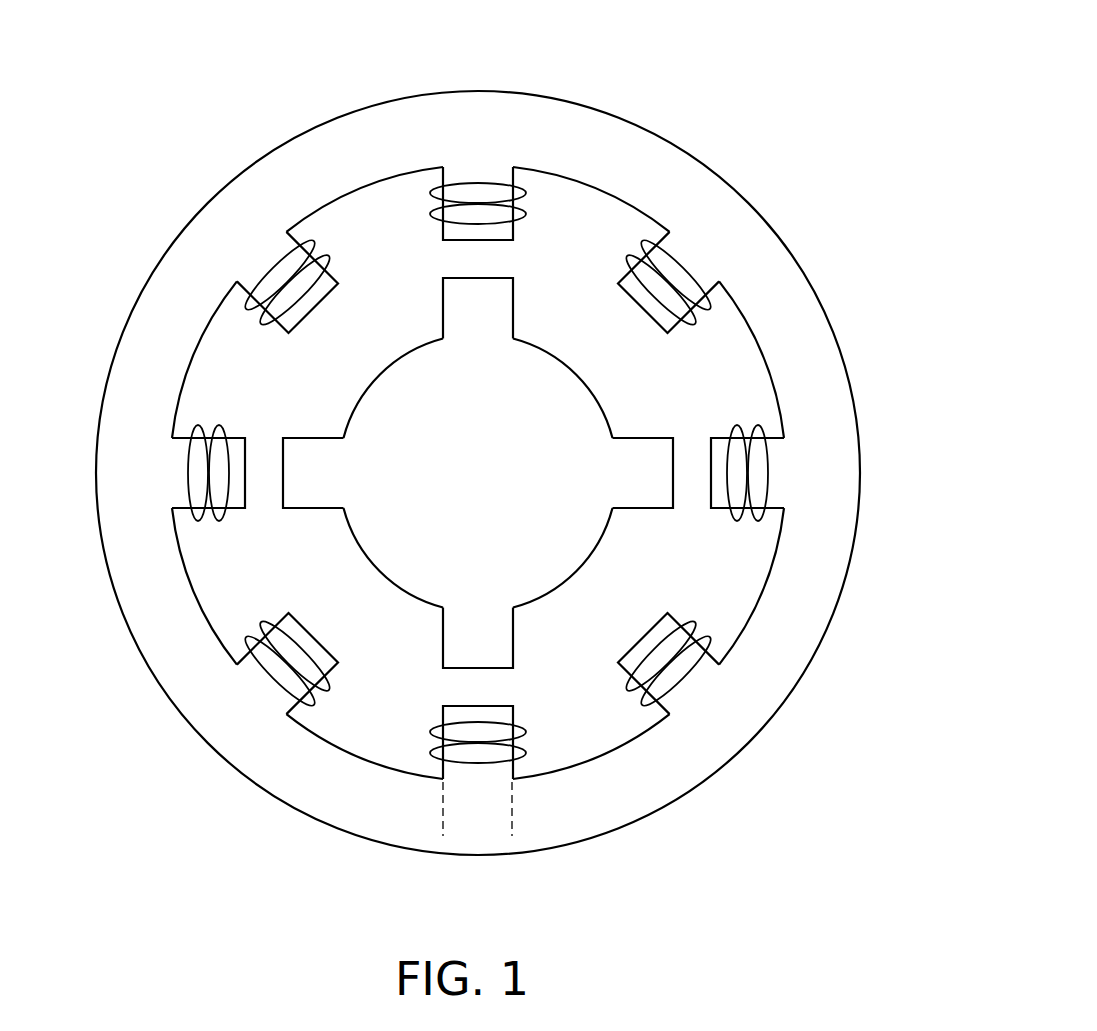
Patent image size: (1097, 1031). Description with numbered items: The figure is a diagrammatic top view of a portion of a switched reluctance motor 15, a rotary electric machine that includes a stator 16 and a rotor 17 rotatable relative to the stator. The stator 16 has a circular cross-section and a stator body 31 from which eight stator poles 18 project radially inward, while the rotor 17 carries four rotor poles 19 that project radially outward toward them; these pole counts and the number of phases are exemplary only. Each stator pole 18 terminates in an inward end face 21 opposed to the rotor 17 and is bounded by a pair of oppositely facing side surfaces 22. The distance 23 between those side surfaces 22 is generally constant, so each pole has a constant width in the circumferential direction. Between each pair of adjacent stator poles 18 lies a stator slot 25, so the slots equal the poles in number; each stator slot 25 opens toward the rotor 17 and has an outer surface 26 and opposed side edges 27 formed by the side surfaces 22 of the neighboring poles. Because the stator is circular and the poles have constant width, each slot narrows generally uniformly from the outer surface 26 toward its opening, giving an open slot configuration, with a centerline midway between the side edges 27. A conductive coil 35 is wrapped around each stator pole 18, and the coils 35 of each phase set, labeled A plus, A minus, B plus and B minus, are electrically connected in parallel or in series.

The switched reluctance motor 15 is at (468, 449).
The stator 16 is at (507, 428).
The rotor 17 is at (482, 471).
The stator pole 18 is at (630, 282).
The rotor pole 19 is at (497, 305).
The end face 21 is at (243, 482).
The side surface 22 is at (237, 507).
The distance between side surfaces 23 is at (443, 818).
The stator slot 25 is at (387, 222).
The outer surface 26 is at (320, 716).
The side edge 27 is at (313, 700).
The stator body 31 is at (758, 675).
The coil 35 is at (647, 242).